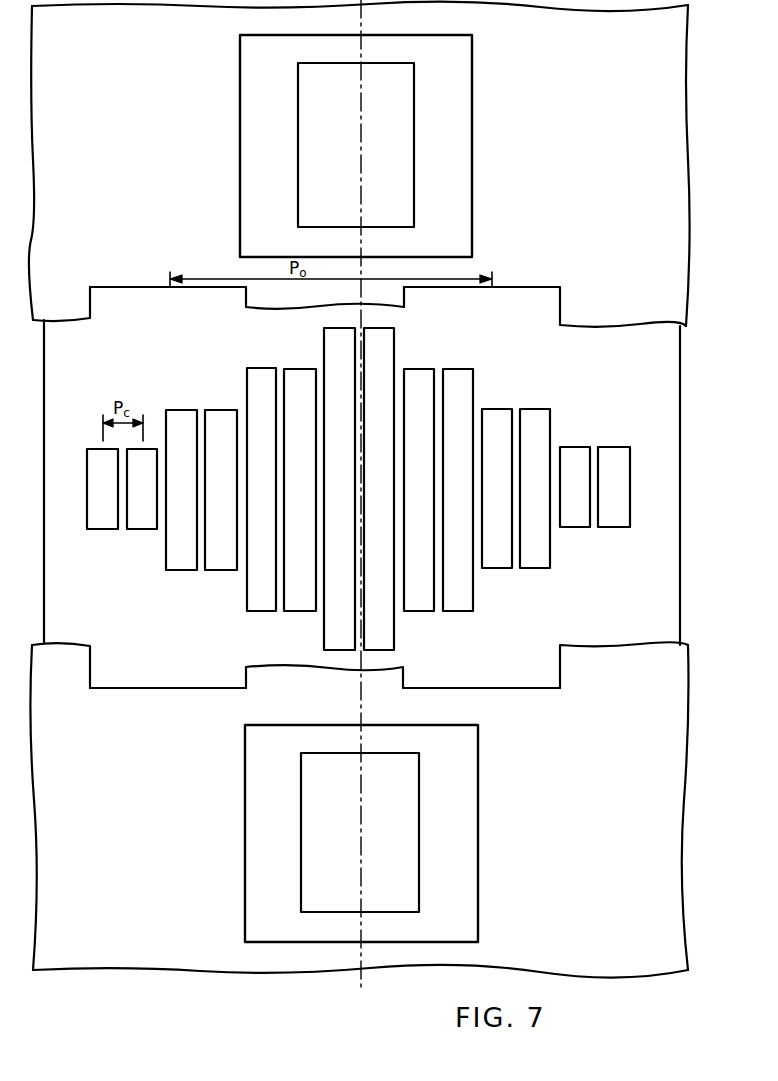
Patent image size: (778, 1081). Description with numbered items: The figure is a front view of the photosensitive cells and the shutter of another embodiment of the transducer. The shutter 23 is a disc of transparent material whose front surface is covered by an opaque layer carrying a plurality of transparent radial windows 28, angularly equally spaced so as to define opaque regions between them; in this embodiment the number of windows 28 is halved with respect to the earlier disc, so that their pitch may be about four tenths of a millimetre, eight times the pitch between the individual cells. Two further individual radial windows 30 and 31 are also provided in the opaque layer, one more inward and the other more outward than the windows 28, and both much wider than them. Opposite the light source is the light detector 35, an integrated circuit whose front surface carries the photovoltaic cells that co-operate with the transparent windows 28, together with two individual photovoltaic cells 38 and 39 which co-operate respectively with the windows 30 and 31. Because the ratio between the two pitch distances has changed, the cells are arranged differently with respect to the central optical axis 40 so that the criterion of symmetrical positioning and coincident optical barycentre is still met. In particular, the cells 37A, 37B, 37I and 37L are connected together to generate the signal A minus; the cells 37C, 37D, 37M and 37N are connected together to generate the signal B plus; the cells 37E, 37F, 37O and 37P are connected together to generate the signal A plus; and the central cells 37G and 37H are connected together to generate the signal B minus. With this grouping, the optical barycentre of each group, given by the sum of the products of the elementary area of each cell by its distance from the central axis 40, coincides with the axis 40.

The shutter 23 is at (637, 318).
The transparent radial windows 28 is at (129, 284).
The individual radial window 30 is at (472, 152).
The individual radial window 31 is at (478, 826).
The light detector 35 is at (58, 391).
The photovoltaic cell 37A is at (101, 519).
The photovoltaic cell 37B is at (141, 519).
The photovoltaic cell 37C is at (180, 418).
The photovoltaic cell 37D is at (218, 556).
The photovoltaic cell 37E is at (257, 380).
The photovoltaic cell 37F is at (296, 378).
The central photovoltaic cell 37G is at (328, 627).
The central photovoltaic cell 37H is at (389, 632).
The photovoltaic cell 37I is at (424, 381).
The photovoltaic cell 37L is at (461, 380).
The photovoltaic cell 37M is at (498, 422).
The photovoltaic cell 37N is at (533, 425).
The photovoltaic cell 37O is at (576, 510).
The photovoltaic cell 37P is at (613, 510).
The individual photovoltaic cell 38 is at (408, 167).
The individual photovoltaic cell 39 is at (410, 800).
The central optical axis 40 is at (359, 705).